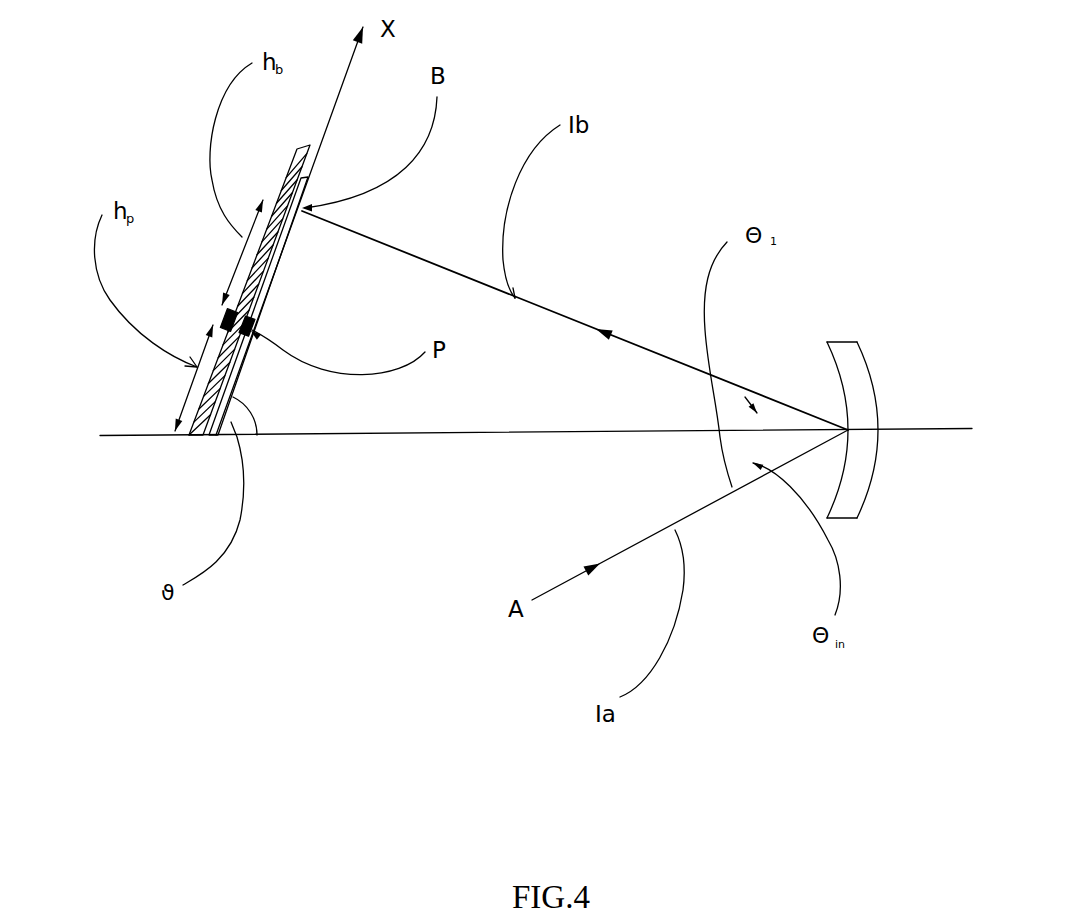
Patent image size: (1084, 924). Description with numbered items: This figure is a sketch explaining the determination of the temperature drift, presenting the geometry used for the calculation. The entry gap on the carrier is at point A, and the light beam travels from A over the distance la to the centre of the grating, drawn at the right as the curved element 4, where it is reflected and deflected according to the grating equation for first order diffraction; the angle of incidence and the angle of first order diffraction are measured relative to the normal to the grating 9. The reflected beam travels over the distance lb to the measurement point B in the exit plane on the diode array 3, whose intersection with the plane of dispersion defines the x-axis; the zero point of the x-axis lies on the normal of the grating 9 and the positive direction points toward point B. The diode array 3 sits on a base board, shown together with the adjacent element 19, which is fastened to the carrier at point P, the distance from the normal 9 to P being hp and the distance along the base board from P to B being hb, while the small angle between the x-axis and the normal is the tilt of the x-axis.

The diode array 3 is at (313, 160).
The curved mirror 4 is at (848, 342).
The normal to the grating 9 is at (438, 437).
The plate 19 is at (232, 330).